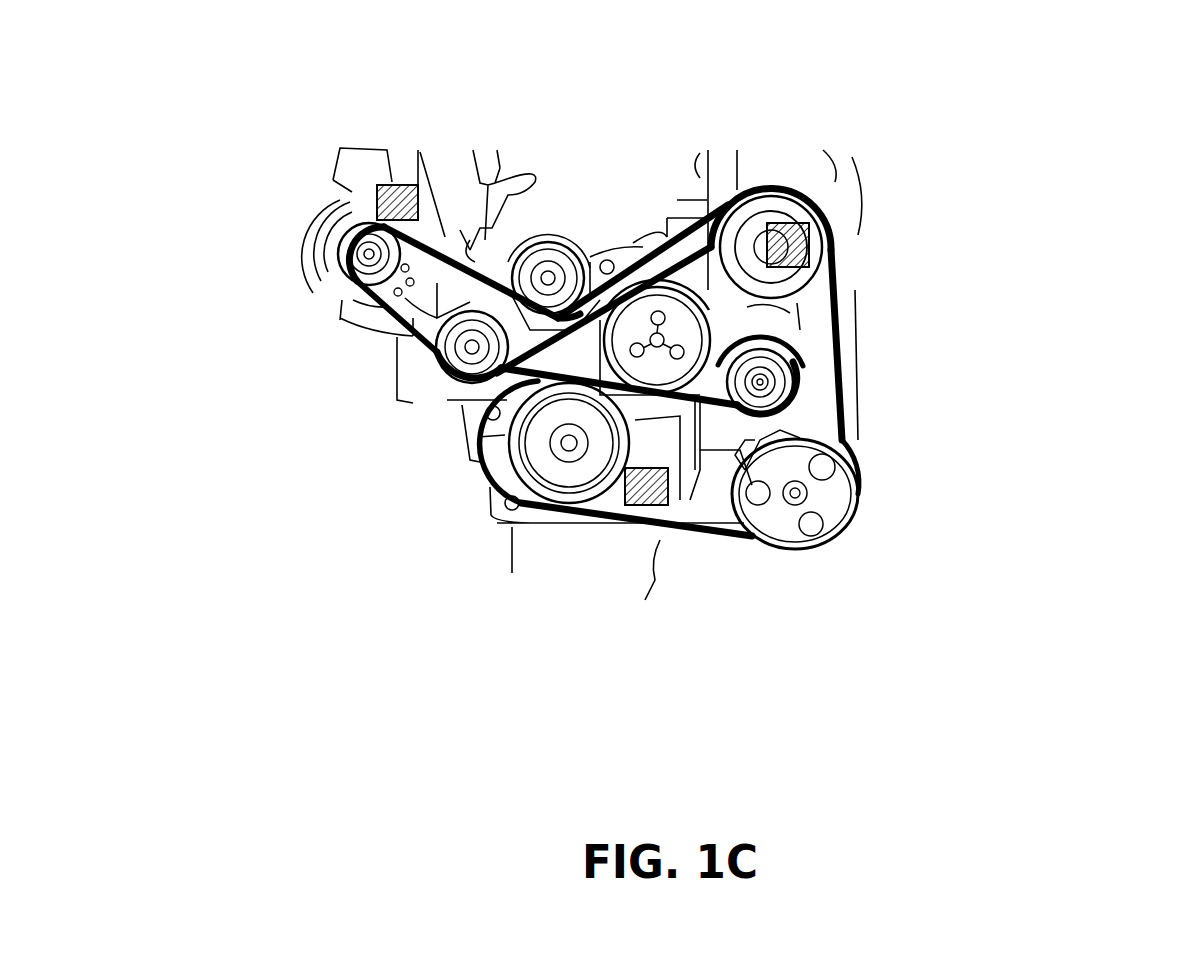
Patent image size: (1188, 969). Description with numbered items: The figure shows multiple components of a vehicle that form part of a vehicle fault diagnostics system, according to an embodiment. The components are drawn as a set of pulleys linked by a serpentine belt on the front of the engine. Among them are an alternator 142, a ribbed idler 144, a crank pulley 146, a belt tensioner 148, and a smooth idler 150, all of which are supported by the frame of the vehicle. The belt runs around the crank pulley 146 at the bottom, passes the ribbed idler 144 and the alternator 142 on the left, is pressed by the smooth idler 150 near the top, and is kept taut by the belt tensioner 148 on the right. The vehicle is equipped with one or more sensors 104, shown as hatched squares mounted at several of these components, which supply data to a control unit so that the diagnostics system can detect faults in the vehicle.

The sensors 104 is at (1033, 88).
The alternator 142 is at (417, 349).
The ribbed idler 144 is at (525, 455).
The crank pulley 146 is at (583, 521).
The belt tensioner 148 is at (803, 384).
The smooth idler 150 is at (648, 222).